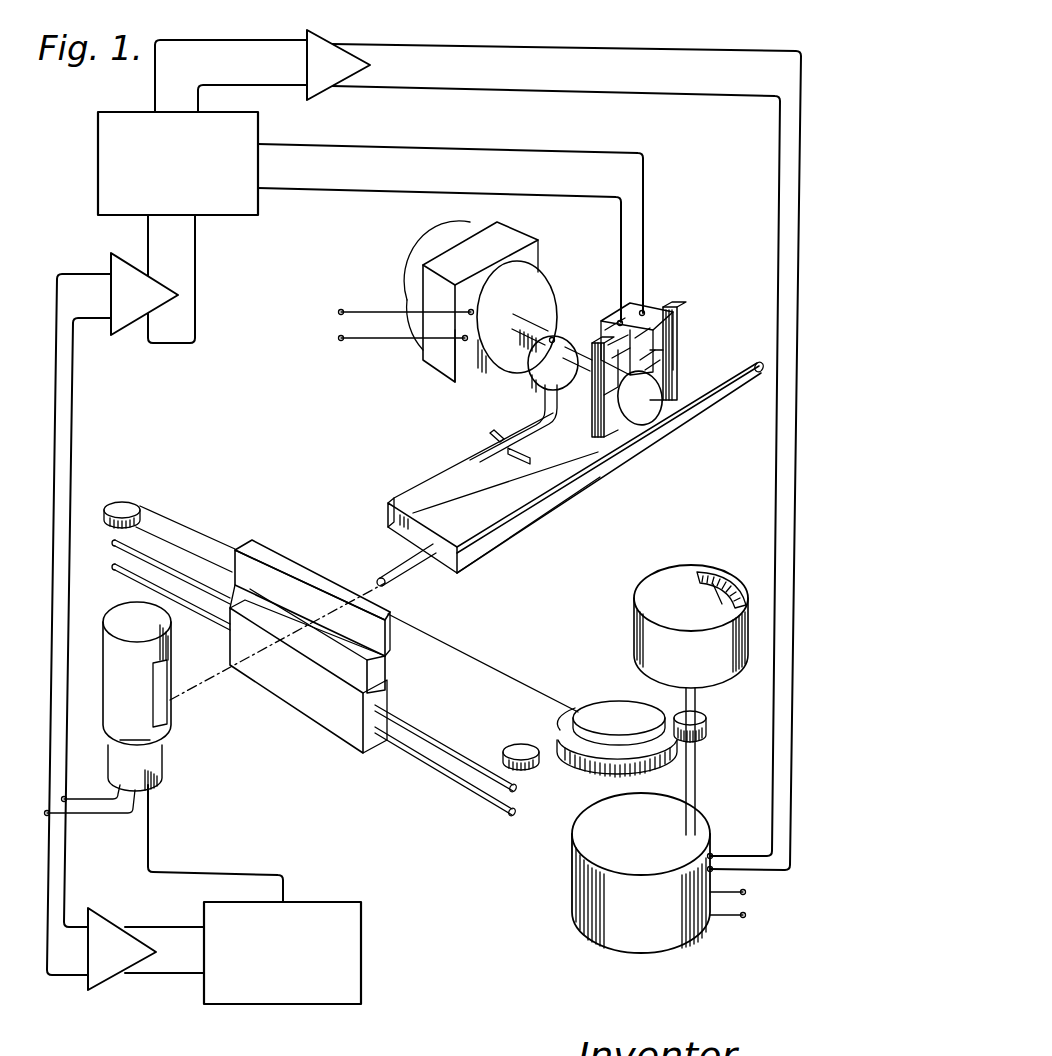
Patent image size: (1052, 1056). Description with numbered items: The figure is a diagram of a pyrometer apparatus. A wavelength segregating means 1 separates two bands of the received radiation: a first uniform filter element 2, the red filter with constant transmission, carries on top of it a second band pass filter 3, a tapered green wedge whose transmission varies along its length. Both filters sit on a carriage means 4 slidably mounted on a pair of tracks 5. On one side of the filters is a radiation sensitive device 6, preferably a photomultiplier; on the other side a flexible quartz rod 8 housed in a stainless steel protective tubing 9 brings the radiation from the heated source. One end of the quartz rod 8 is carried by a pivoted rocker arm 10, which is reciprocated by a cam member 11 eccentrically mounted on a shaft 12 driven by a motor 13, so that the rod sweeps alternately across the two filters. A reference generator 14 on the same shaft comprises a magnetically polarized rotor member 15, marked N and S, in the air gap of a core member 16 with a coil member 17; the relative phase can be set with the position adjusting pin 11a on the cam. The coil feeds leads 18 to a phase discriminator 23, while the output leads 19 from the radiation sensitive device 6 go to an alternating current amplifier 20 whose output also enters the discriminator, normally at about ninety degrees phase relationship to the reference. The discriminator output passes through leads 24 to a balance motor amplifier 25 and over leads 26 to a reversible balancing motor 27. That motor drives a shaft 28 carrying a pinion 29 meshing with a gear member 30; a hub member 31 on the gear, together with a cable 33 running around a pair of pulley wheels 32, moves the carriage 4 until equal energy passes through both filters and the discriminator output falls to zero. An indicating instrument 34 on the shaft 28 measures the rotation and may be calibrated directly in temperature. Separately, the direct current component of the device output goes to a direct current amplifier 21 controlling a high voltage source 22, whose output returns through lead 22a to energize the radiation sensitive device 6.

The wavelength segregating means 1 is at (278, 748).
The first uniform filter element 2 is at (378, 674).
The second band pass filter 3 is at (286, 566).
The carriage means 4 is at (350, 740).
The tracks 5 is at (478, 790).
The radiation sensitive device 6 is at (122, 616).
The quartz rod 8 is at (377, 578).
The protective tubing 9 is at (572, 474).
The rocker arm 10 is at (428, 482).
The cam member 11 is at (548, 374).
The position adjusting pin 11a is at (556, 339).
The shaft 12 is at (535, 328).
The motor 13 is at (528, 250).
The reference generator 14 is at (712, 343).
The rotor member 15 is at (652, 408).
The core member 16 is at (672, 388).
The coil member 17 is at (646, 307).
The leads 18 is at (448, 196).
The output leads 19 is at (58, 680).
The alternating current amplifier 20 is at (136, 318).
The direct current amplifier 21 is at (110, 966).
The high voltage source 22 is at (282, 1006).
The lead 22a is at (234, 875).
The phase discriminator 23 is at (98, 160).
The leads 24 is at (276, 85).
The balance motor amplifier 25 is at (338, 65).
The leads 26 is at (792, 477).
The reversible balancing motor 27 is at (688, 930).
The shaft 28 is at (695, 781).
The pinion 29 is at (707, 724).
The gear member 30 is at (592, 770).
The hub member 31 is at (619, 723).
The pulley wheels 32 is at (130, 505).
The cable 33 is at (488, 658).
The indicating instrument 34 is at (686, 570).